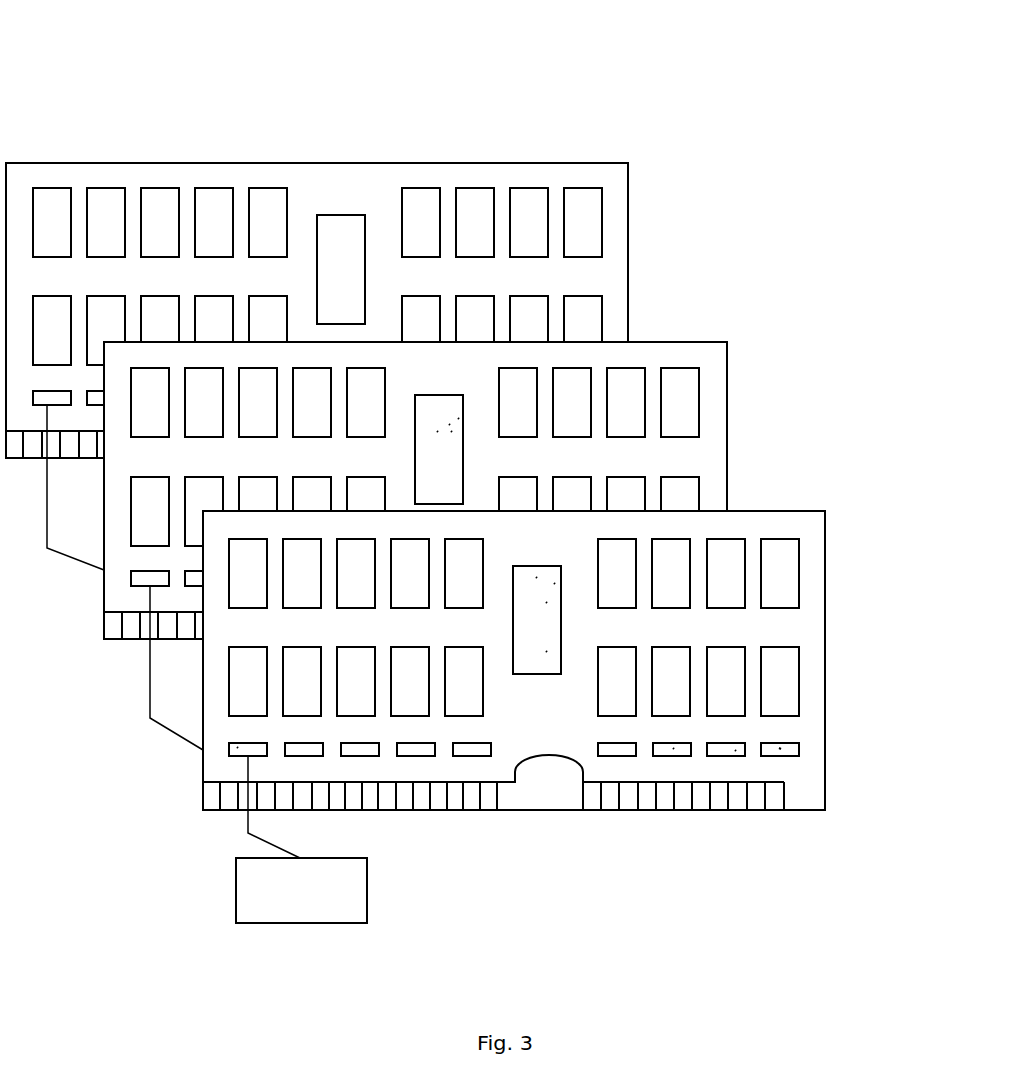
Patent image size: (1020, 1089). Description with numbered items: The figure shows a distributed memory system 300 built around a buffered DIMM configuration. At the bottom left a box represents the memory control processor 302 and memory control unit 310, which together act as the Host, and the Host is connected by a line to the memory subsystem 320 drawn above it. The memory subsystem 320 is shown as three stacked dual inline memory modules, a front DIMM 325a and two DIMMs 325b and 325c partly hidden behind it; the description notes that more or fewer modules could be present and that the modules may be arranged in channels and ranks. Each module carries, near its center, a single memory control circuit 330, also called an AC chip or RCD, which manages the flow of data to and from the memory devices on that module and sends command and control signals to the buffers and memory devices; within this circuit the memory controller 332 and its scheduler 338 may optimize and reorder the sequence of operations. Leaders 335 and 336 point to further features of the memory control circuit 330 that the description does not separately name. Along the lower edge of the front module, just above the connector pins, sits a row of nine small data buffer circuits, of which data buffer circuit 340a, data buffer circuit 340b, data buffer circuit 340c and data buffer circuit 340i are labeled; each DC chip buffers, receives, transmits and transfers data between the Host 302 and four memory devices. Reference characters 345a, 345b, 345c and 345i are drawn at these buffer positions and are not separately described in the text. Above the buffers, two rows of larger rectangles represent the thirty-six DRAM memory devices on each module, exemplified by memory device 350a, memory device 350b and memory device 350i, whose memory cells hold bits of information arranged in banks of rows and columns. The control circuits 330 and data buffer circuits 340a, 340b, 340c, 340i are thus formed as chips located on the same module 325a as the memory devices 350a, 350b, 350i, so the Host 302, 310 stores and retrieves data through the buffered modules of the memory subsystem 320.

The distributed memory system 300 is at (128, 80).
The memory control processor 302 is at (236, 882).
The memory control unit 310 is at (367, 923).
The memory subsystem 320 is at (735, 329).
The DIMM 325a is at (825, 538).
The DIMM 325b is at (727, 376).
The DIMM 325c is at (628, 195).
The memory control circuit 330 is at (432, 425).
The memory controller 332 is at (459, 419).
The RCD input 335 is at (438, 432).
The RCD output 336 is at (452, 432).
The scheduler 338 is at (450, 425).
The data buffer circuit 340a is at (798, 748).
The data buffer circuit 340b is at (726, 750).
The data buffer circuit 340c is at (662, 750).
The data buffer circuit 340i is at (235, 750).
The buffer connection 345a is at (779, 748).
The buffer connection 345b is at (735, 750).
The buffer connection 345c is at (673, 748).
The buffer connection 345i is at (237, 747).
The memory device 350a is at (779, 573).
The memory device 350b is at (725, 680).
The memory device 350i is at (248, 680).